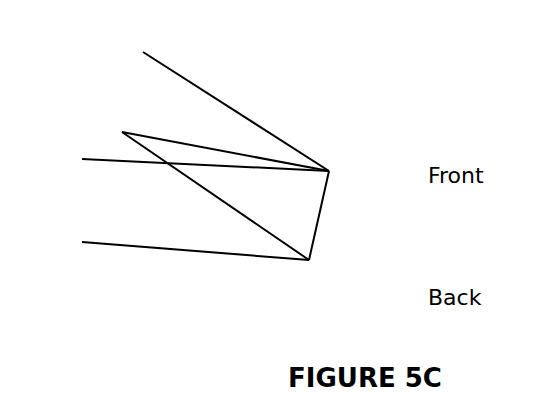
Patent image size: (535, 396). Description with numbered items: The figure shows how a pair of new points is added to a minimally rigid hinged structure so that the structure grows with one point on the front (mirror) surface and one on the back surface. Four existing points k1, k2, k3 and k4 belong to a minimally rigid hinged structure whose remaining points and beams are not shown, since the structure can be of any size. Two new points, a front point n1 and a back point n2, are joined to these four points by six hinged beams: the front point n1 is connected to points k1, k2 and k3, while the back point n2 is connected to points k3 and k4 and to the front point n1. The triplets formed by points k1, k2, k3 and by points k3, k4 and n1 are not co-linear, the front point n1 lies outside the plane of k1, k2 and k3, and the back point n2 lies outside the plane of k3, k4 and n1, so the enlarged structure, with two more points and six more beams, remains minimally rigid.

The point k1 is at (213, 96).
The point k2 is at (184, 160).
The point k3 is at (213, 175).
The point k4 is at (174, 246).
The new point (n+1) n1 is at (351, 214).
The new point (n+2) n2 is at (370, 281).